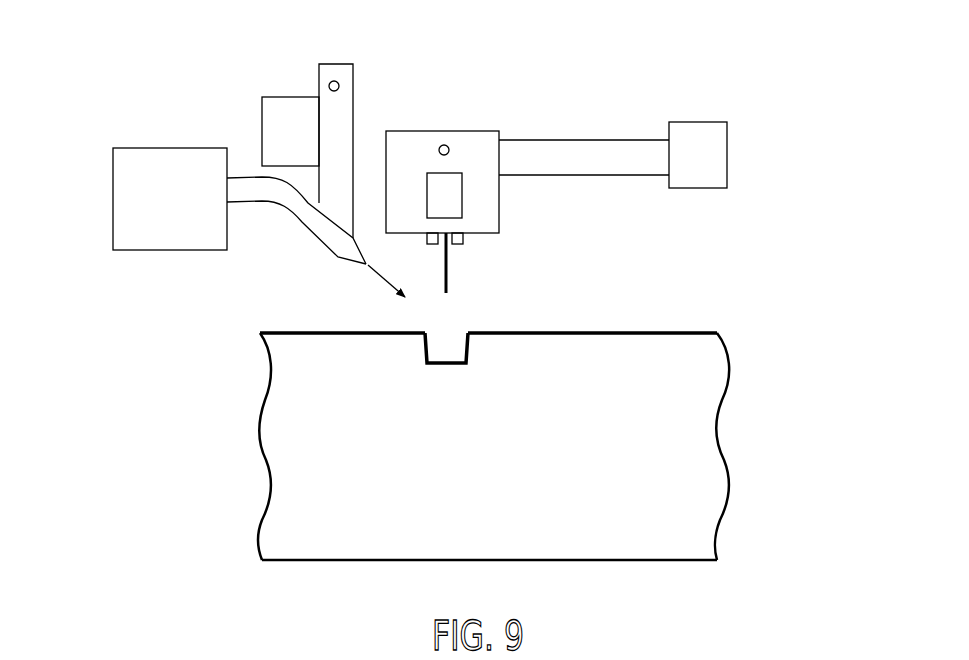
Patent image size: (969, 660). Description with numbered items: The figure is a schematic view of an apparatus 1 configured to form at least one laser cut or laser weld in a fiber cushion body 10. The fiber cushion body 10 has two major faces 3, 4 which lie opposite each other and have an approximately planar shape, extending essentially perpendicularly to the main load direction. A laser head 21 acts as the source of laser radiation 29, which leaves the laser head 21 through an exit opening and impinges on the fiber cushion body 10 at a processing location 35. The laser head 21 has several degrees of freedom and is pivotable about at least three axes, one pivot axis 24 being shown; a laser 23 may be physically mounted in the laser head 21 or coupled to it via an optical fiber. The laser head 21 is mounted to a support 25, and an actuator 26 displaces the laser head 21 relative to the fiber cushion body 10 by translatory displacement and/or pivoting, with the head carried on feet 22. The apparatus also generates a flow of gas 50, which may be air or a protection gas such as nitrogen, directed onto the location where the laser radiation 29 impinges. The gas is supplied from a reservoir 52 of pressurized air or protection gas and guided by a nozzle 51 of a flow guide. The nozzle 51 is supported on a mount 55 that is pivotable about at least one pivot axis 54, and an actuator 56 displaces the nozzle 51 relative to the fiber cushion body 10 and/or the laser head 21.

The laser processing apparatus 1 is at (108, 53).
The major face 3 is at (290, 332).
The major face 4 is at (323, 562).
The fiber cushion body 10 is at (258, 329).
The laser head 21 is at (430, 127).
The nozzle feet 22 is at (437, 246).
The laser 23 is at (462, 190).
The pivot axis 24 is at (447, 145).
The support 25 is at (588, 140).
The actuator 26 is at (700, 122).
The laser radiation 29 is at (447, 268).
The groove 35 is at (430, 365).
The flow of gas 50 is at (384, 280).
The nozzle 51 is at (343, 262).
The gas supply unit 52 is at (150, 148).
The pivot axis 54 is at (338, 81).
The mount 55 is at (318, 63).
The actuator 56 is at (270, 97).